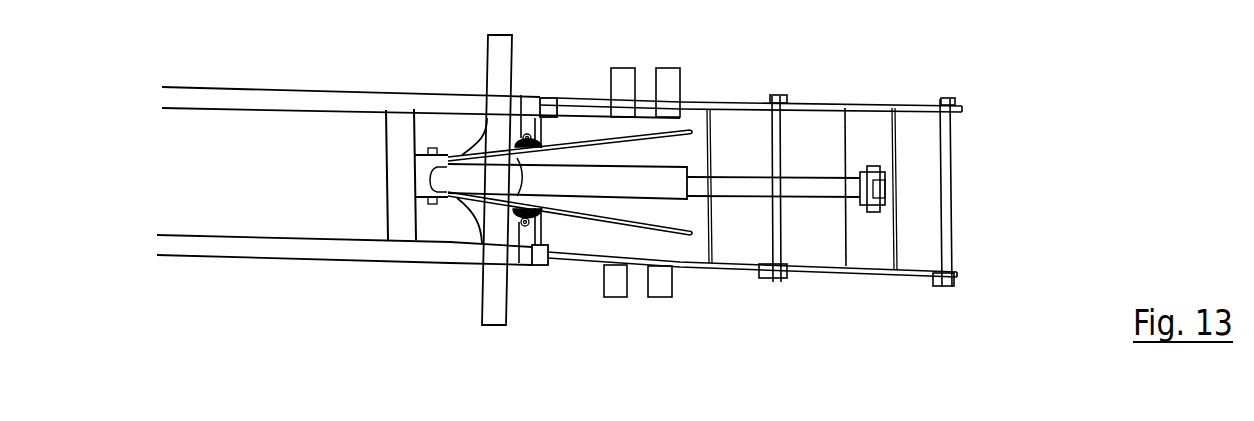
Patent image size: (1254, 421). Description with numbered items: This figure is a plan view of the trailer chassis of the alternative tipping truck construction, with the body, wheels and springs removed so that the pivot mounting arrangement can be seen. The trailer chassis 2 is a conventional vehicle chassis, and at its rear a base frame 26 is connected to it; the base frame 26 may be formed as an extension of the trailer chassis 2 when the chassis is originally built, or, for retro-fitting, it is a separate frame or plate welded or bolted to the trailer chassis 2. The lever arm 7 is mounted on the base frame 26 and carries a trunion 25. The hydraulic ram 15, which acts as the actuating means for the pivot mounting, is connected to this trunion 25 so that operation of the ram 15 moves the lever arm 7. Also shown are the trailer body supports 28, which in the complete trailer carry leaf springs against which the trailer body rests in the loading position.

The trailer chassis 2 is at (386, 252).
The lever arm 7 is at (895, 105).
The hydraulic ram 15 is at (752, 184).
The trunion 25 is at (860, 172).
The base frame 26 is at (573, 98).
The trailer body supports 28 is at (620, 76).